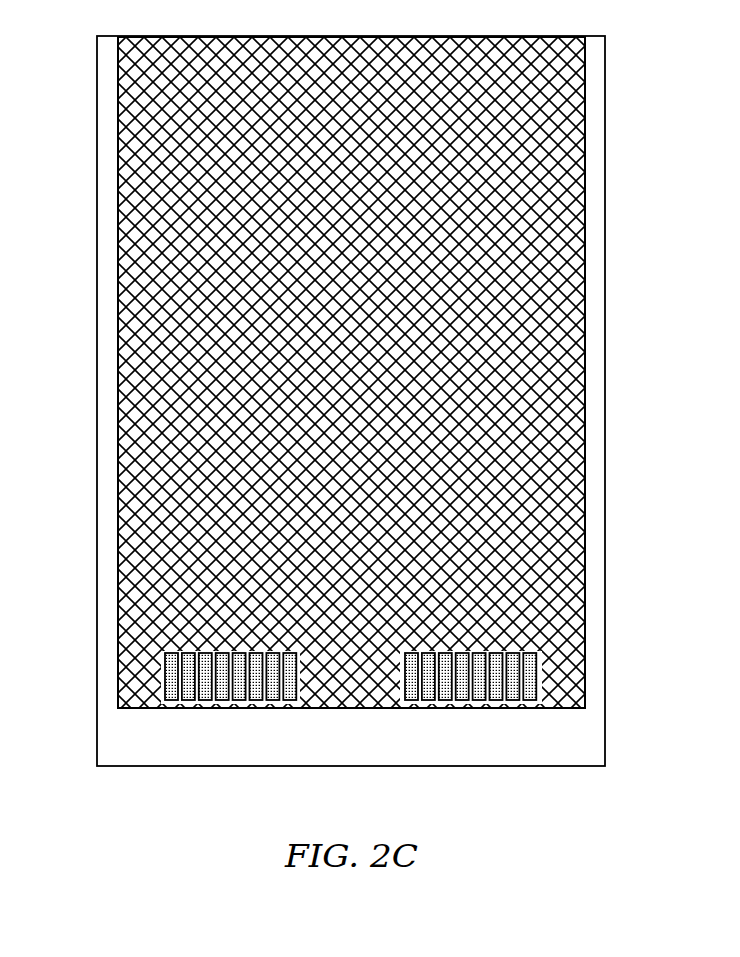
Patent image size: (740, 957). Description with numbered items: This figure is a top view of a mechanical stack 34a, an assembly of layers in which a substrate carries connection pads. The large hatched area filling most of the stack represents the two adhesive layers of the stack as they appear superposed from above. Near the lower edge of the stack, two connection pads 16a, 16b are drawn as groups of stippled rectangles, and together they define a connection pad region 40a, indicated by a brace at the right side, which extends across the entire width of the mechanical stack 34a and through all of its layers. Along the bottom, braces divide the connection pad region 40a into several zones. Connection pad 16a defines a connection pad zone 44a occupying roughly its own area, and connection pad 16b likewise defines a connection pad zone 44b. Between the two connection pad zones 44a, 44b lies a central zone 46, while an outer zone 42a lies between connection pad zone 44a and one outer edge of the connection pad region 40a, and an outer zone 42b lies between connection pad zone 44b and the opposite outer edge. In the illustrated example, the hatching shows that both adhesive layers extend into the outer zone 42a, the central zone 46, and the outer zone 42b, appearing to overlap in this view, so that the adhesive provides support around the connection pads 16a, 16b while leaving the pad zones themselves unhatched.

The mechanical stack 34a is at (78, 35).
The connection pad 16a is at (223, 700).
The connection pad 16b is at (480, 700).
The connection pad region 40a is at (617, 655).
The outer zone 42a is at (160, 777).
The connection pad zone 44a is at (295, 777).
The central zone 46 is at (402, 777).
The connection pad zone 44b is at (537, 777).
The outer zone 42b is at (585, 777).